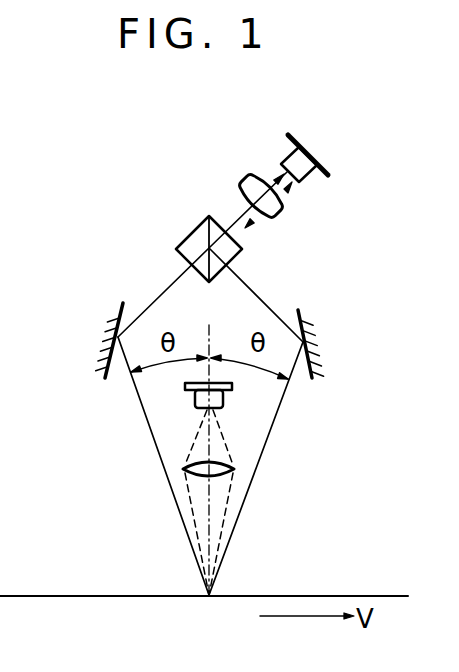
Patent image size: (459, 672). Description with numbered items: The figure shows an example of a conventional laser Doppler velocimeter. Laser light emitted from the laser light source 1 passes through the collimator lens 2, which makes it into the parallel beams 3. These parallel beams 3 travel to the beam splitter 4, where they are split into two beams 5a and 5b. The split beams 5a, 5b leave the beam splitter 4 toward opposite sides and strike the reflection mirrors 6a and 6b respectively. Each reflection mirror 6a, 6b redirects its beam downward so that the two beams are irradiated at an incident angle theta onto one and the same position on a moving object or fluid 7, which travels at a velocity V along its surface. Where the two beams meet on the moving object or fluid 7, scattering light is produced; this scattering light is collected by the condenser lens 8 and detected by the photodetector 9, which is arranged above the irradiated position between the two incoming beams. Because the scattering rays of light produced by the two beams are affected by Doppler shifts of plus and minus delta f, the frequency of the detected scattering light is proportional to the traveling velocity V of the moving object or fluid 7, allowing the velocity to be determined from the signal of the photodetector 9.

The laser light source 1 is at (288, 152).
The collimator lens 2 is at (236, 183).
The parallel beams 3 is at (229, 212).
The beam splitter 4 is at (182, 240).
The split beam 5a is at (157, 298).
The split beam 5b is at (255, 290).
The reflection mirror 6a is at (115, 315).
The reflection mirror 6b is at (307, 318).
The moving object or fluid 7 is at (60, 594).
The condenser lens 8 is at (188, 463).
The photodetector 9 is at (192, 397).